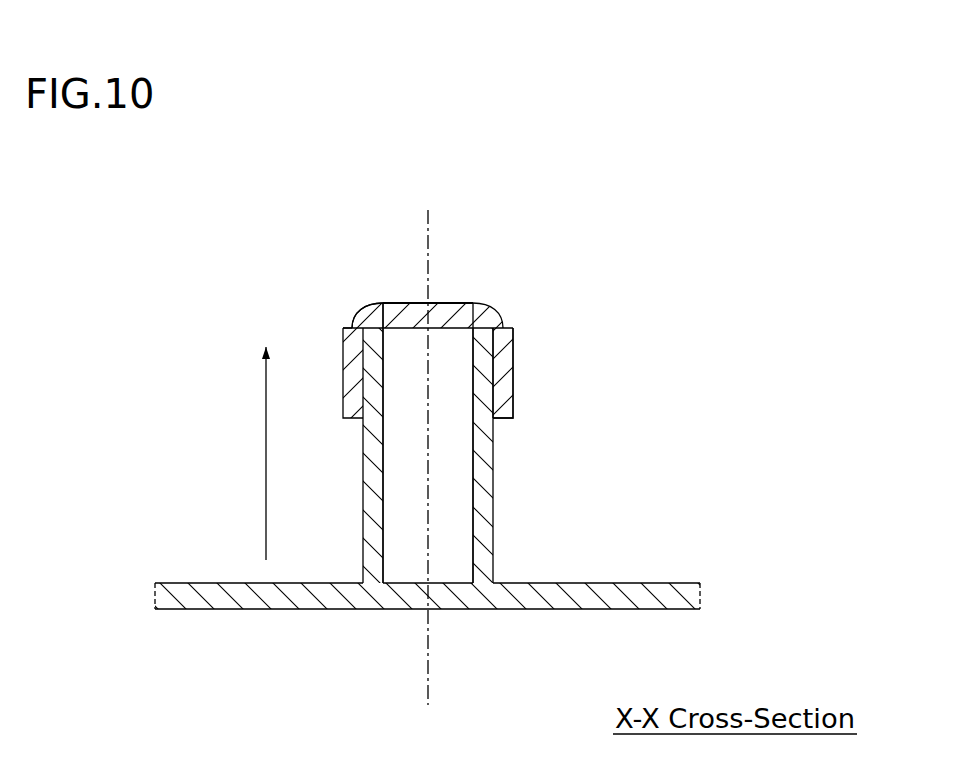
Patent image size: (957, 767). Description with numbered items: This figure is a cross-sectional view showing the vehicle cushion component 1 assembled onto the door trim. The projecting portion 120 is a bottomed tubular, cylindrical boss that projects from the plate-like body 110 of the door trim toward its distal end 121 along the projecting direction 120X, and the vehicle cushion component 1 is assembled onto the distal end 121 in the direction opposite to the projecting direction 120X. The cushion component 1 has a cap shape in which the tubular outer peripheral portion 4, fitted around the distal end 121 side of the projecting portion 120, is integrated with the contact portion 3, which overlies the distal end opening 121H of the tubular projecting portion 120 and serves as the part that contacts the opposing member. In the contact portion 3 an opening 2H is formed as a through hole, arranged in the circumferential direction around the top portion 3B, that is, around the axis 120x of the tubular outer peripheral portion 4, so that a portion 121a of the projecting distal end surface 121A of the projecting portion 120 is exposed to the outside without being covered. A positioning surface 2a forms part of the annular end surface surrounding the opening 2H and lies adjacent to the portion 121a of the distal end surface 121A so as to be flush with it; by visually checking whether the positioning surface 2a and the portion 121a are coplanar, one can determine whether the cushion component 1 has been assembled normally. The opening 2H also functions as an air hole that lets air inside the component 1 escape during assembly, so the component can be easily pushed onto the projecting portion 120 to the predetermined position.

The vehicle cushion component 1 is at (331, 268).
The opening 2H is at (368, 305).
The positioning surface 2a is at (343, 326).
The contact portion 3 is at (506, 304).
The top portion 3B is at (438, 303).
The tubular outer peripheral portion 4 is at (515, 357).
The body (plate-like portion) 110 is at (560, 580).
The projecting portion 120 is at (491, 496).
The projecting direction 120X is at (266, 432).
The axis 120x is at (430, 668).
The distal end 121 is at (486, 343).
The portion of the projecting distal end surface 121a is at (380, 303).
The projecting distal end surface 121A is at (490, 303).
The distal end opening 121H is at (385, 405).